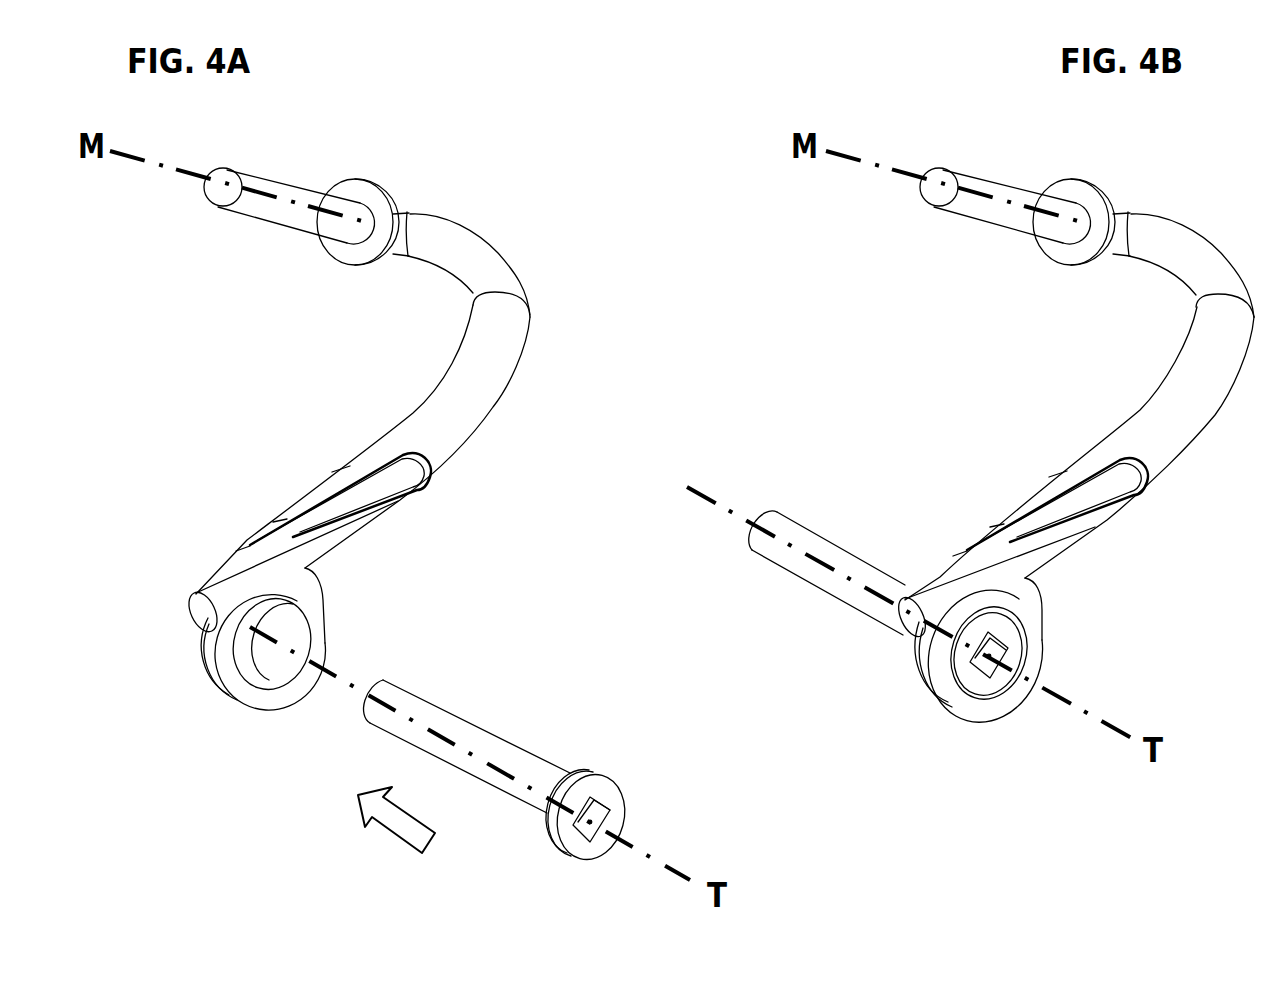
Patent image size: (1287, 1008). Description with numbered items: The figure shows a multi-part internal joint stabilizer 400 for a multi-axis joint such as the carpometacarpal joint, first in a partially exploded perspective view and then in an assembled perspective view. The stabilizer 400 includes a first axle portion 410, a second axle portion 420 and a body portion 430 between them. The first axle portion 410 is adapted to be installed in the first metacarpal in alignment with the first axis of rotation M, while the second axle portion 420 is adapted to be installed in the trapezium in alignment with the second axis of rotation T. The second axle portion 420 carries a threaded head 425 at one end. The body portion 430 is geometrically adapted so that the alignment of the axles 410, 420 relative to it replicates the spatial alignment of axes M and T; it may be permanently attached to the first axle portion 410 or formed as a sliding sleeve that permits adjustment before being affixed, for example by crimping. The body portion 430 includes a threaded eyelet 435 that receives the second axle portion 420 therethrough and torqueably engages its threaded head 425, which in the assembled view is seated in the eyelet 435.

In FIG. 4A, the multi-part internal joint stabilizer 400 is at (585, 353).
In FIG. 4B, the multi-part internal joint stabilizer 400 is at (887, 360).
In FIG. 4A, the first axle portion 410 is at (280, 188).
In FIG. 4B, the first axle portion 410 is at (982, 188).
In FIG. 4A, the second axle portion 420 is at (450, 722).
In FIG. 4B, the second axle portion 420 is at (825, 575).
In FIG. 4A, the threaded head 425 is at (570, 782).
In FIG. 4B, the threaded head 425 is at (973, 683).
In FIG. 4A, the body portion 430 is at (473, 407).
In FIG. 4B, the body portion 430 is at (1177, 430).
In FIG. 4A, the threaded eyelet 435 is at (303, 573).
In FIG. 4B, the threaded eyelet 435 is at (1030, 613).